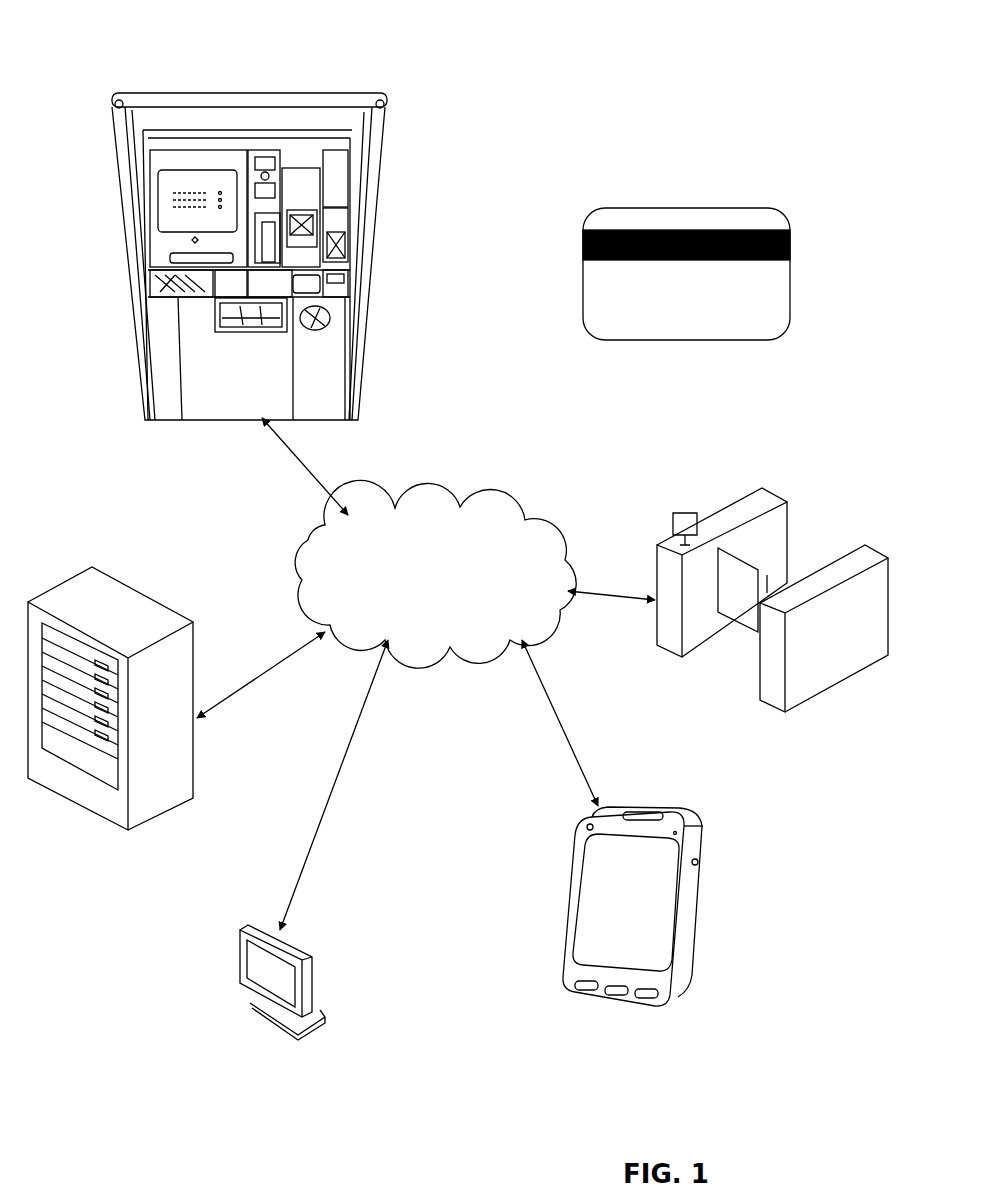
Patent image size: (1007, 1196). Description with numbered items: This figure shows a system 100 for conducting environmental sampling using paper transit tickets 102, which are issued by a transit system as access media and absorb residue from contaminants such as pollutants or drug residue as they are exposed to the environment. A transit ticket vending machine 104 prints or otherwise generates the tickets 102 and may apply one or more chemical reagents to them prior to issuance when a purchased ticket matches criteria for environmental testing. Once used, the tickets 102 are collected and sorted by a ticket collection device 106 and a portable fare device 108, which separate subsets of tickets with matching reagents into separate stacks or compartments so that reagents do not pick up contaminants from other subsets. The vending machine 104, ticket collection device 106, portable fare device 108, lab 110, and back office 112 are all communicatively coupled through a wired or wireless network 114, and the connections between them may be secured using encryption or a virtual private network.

The system 100 is at (52, 41).
The paper transit ticket 102 is at (714, 208).
The transit ticket vending machine 104 is at (373, 232).
The ticket collection device 106 is at (786, 498).
The portable fare device 108 is at (568, 868).
The lab 110 is at (323, 1013).
The back office 112 is at (128, 832).
The network 114 is at (420, 595).